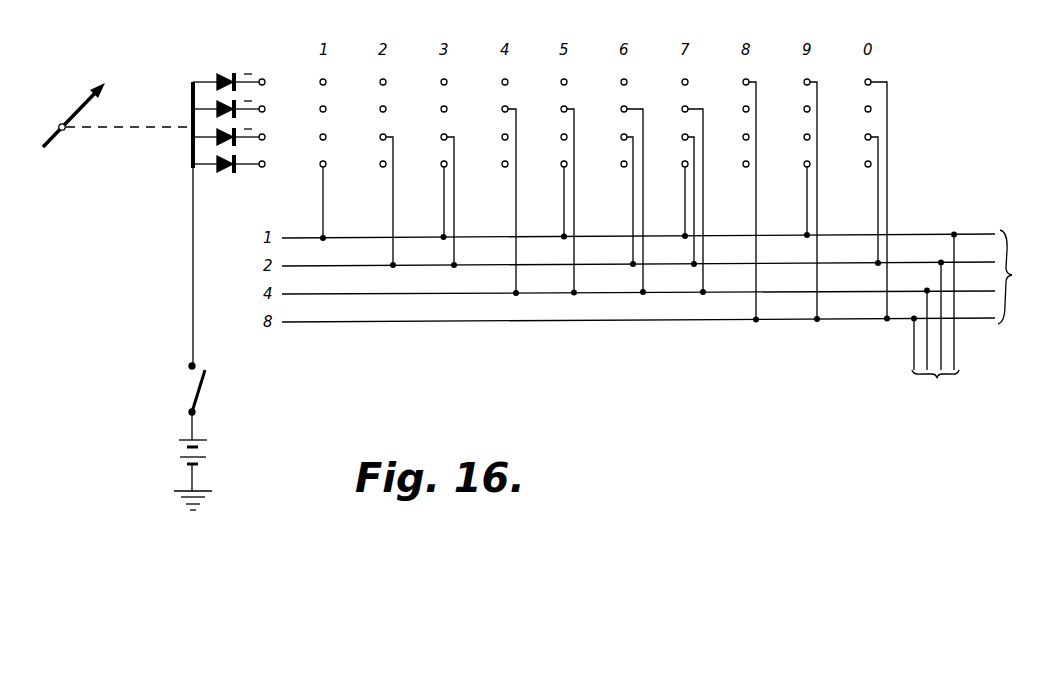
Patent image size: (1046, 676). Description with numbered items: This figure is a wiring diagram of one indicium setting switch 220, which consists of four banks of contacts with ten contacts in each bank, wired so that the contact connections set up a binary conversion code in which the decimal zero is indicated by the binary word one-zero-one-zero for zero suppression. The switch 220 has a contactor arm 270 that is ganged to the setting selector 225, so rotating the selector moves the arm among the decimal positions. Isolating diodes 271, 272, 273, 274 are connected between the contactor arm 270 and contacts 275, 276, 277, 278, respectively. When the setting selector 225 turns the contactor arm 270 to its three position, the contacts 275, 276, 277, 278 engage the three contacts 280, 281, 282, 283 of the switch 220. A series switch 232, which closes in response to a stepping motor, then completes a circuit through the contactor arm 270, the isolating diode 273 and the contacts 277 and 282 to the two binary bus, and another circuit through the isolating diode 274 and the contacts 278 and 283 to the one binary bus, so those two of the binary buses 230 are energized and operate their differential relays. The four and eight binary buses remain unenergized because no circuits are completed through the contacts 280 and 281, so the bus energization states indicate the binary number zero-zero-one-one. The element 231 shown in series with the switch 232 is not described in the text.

The setting selector 225 is at (63, 131).
The contactor arm 270 is at (191, 92).
The isolating diode 271 is at (224, 76).
The isolating diode 272 is at (217, 110).
The isolating diode 273 is at (217, 138).
The isolating diode 274 is at (217, 165).
The contact 275 is at (264, 79).
The contact 276 is at (264, 106).
The contact 277 is at (264, 134).
The contact 278 is at (264, 161).
The three contact 280 is at (447, 82).
The three contact 281 is at (447, 109).
The three contact 282 is at (447, 137).
The three contact 283 is at (447, 164).
The binary buses 230 is at (950, 327).
The setting switch 220 is at (392, 338).
The switch 232 is at (207, 393).
The battery 231 is at (208, 447).